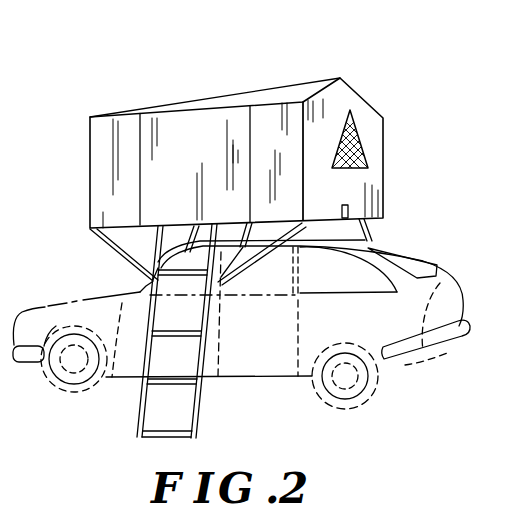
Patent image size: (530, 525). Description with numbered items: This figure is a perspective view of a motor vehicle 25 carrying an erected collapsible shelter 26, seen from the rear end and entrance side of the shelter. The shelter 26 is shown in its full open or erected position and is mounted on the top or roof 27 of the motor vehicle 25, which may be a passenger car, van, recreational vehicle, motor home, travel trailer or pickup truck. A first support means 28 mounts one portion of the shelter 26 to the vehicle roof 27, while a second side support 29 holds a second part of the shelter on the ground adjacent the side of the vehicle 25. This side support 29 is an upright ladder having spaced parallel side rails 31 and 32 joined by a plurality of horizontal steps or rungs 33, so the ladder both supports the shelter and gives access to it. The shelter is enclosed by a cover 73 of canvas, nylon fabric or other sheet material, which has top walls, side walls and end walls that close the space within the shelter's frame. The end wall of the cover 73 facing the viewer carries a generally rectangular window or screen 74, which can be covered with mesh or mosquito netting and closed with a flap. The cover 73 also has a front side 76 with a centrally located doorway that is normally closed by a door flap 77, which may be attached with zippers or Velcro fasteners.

The motor vehicle 25 is at (408, 372).
The collapsible shelter 26 is at (370, 88).
The roof 27 is at (358, 242).
The first support means 28 is at (316, 225).
The second side support 29 is at (178, 331).
The side rail 31 is at (138, 409).
The side rail 32 is at (208, 348).
The rungs 33 is at (178, 348).
The cover 73 is at (130, 116).
The window 74 is at (362, 153).
The front side 76 is at (277, 127).
The door flap 77 is at (192, 135).